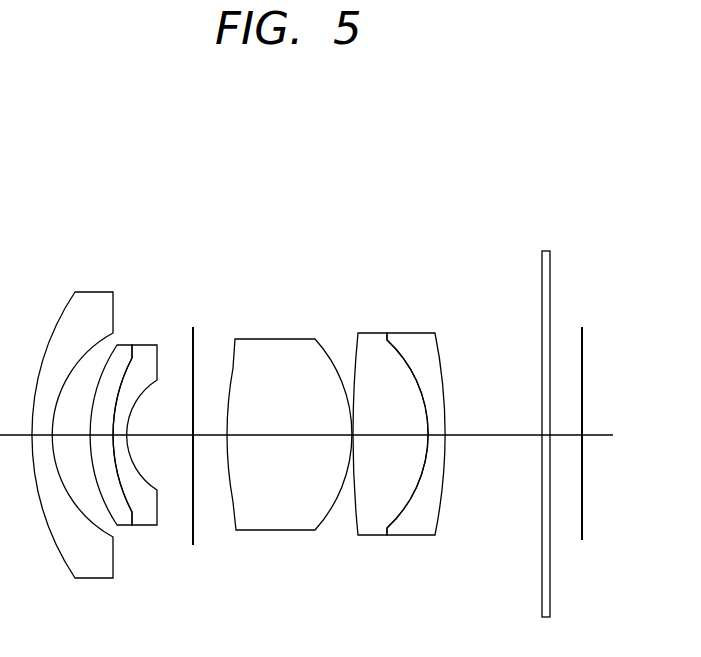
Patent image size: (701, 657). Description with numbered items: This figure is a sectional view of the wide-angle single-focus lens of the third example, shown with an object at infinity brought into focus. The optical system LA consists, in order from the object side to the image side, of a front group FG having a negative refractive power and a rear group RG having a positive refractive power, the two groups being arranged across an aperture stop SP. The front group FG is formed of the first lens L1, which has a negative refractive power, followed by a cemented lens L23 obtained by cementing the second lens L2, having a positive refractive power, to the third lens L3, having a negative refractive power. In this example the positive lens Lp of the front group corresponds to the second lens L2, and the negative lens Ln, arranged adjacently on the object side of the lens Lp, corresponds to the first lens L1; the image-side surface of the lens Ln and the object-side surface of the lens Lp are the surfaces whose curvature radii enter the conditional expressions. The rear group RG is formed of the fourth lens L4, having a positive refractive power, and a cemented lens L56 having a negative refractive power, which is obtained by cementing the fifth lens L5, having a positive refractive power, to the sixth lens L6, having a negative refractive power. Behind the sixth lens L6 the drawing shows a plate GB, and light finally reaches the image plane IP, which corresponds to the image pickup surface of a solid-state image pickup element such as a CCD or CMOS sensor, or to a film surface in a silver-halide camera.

The optical system LA is at (32, 125).
The front group FG is at (32, 162).
The rear group RG is at (444, 162).
The cemented lens L23 is at (105, 198).
The cemented lens L56 is at (345, 224).
The lens having a negative refractive power Ln is at (72, 394).
The lens having a positive refractive power Lp is at (116, 368).
The first lens L1 is at (104, 275).
The second lens L2 is at (137, 275).
The third lens L3 is at (172, 275).
The fourth lens L4 is at (238, 275).
The fifth lens L5 is at (357, 275).
The sixth lens L6 is at (431, 275).
The aperture stop SP is at (196, 338).
The glass block GB is at (551, 278).
The image plane IP is at (584, 357).